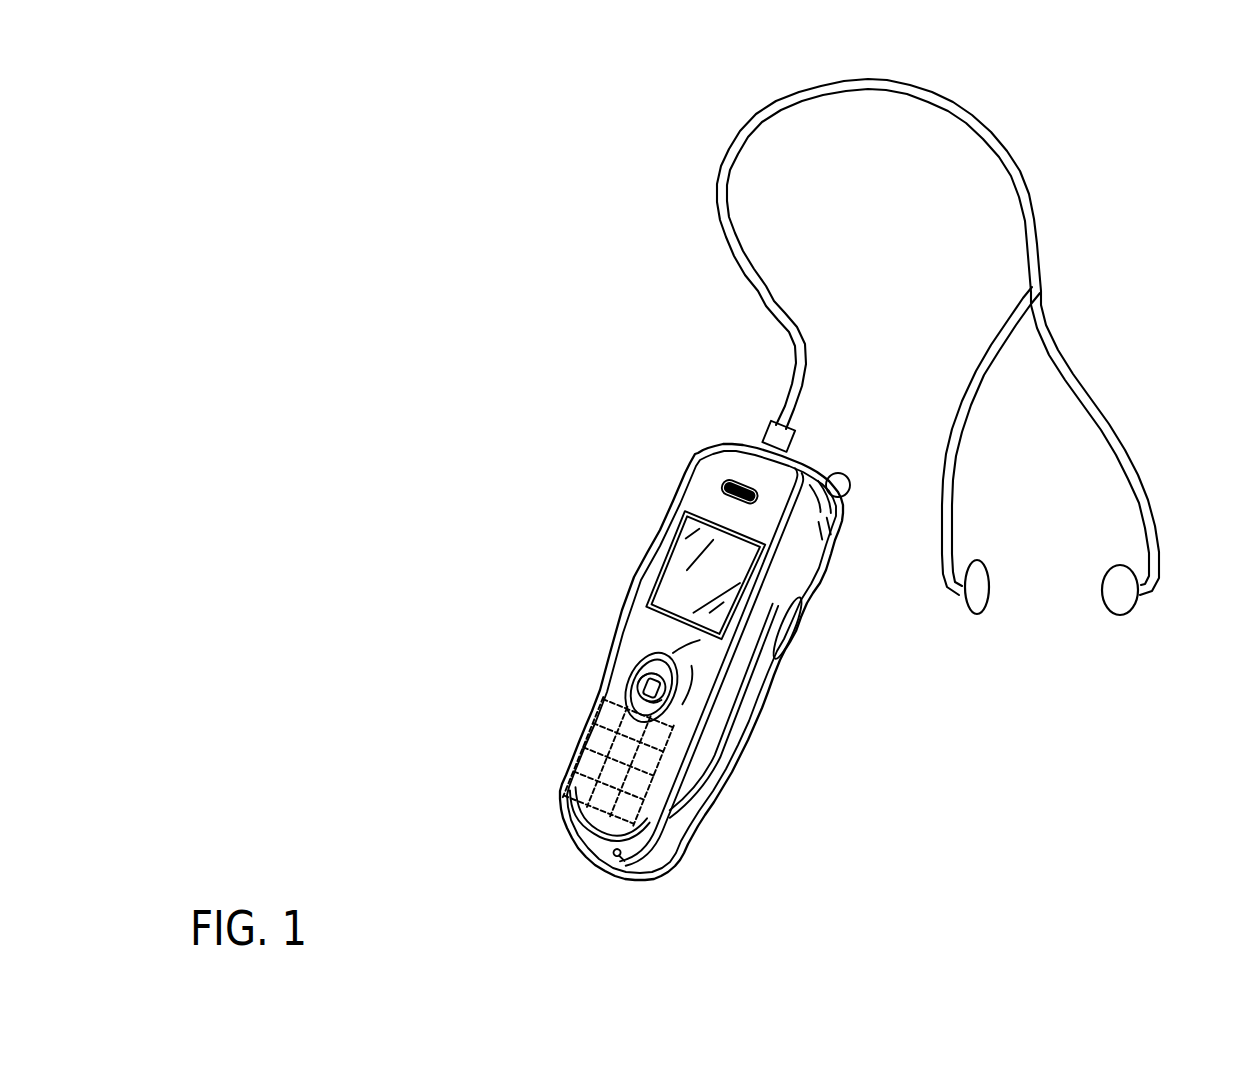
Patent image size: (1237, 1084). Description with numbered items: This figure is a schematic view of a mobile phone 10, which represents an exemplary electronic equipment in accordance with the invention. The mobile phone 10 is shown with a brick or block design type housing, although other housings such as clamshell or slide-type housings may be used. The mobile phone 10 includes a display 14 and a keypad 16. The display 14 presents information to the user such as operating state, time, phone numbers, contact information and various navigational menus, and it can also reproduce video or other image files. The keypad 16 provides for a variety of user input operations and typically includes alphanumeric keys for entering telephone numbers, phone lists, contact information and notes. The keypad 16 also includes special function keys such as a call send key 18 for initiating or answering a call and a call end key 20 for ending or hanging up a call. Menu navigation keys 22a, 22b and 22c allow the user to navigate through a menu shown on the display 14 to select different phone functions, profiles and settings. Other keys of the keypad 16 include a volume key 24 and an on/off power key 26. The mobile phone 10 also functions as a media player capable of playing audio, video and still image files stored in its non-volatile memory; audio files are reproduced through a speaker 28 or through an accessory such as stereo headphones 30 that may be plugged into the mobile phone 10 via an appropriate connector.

The mobile phone 10 is at (428, 375).
The display 14 is at (706, 576).
The keypad 16 is at (478, 758).
The call send key 18 is at (651, 687).
The call end key 20 is at (682, 669).
The menu navigation key 22a is at (651, 688).
The menu navigation key 22b is at (653, 700).
The menu navigation key 22c is at (647, 678).
The volume key 24 is at (788, 628).
The on/off power key 26 is at (832, 473).
The speaker 28 is at (740, 492).
The stereo headphones 30 is at (1108, 135).